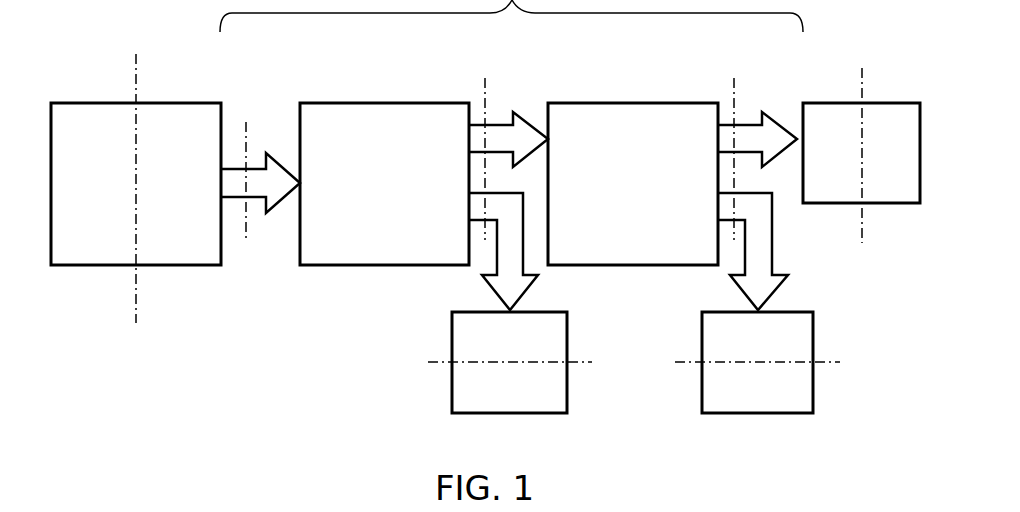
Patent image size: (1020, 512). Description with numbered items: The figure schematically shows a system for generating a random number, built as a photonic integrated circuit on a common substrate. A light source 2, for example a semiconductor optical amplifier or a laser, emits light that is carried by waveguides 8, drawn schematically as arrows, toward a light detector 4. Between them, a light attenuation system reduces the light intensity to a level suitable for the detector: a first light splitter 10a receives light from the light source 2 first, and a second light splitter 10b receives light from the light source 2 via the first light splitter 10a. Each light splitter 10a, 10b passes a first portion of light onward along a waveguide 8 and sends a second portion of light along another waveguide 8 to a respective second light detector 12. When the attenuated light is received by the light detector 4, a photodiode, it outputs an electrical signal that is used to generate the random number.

The light source 2 is at (96, 103).
The light detector 4 is at (893, 103).
The waveguides 8 is at (262, 200).
The first light splitter 10a is at (343, 103).
The second light splitter 10b is at (633, 103).
The second light detector 12 is at (452, 392).